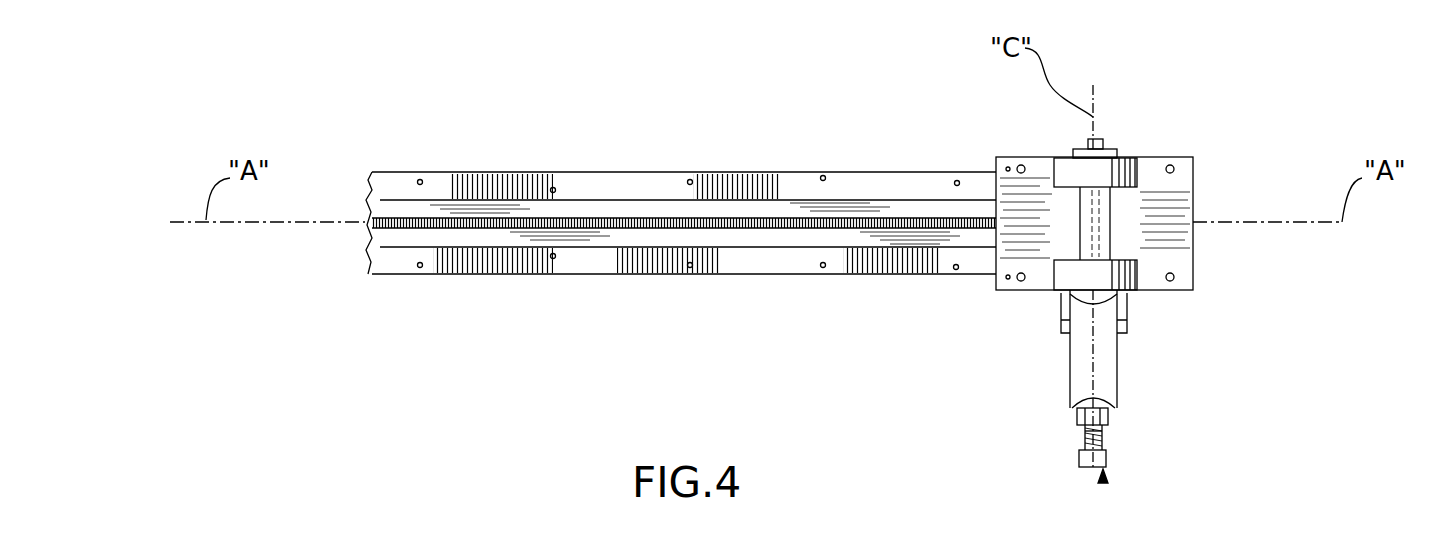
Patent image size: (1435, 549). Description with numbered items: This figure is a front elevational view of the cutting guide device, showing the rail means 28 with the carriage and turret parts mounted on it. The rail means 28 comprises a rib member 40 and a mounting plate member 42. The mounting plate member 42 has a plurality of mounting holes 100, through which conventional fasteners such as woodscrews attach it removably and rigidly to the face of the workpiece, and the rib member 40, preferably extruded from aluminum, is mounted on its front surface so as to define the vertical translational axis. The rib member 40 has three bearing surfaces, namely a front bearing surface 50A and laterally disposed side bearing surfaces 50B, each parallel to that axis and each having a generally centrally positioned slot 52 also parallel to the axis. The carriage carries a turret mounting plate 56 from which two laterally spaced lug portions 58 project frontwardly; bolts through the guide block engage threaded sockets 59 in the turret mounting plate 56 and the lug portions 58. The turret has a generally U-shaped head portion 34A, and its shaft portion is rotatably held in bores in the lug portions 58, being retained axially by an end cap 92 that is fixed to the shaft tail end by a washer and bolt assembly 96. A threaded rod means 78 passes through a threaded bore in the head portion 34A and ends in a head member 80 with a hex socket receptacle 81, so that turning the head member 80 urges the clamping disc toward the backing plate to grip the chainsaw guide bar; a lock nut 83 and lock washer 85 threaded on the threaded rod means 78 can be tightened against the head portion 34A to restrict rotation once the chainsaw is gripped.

The rail means 28 is at (362, 247).
The rib member 40 is at (500, 208).
The mounting plate member 42 is at (390, 185).
The front bearing surface 50A is at (654, 234).
The side bearing surfaces 50B is at (805, 190).
The slot 52 is at (485, 240).
The turret mounting plate 56 is at (1195, 177).
The lug portions 58 is at (1133, 172).
The threaded sockets 59 is at (1018, 166).
The threaded rod means 78 is at (1086, 432).
The head member 80 is at (1086, 455).
The hex socket receptacle 81 is at (1105, 480).
The lock nut 83 is at (1105, 427).
The lock washer 85 is at (1105, 412).
The end cap 92 is at (1077, 152).
The bolt assembly 96 is at (1100, 140).
The mounting holes 100 is at (956, 270).
The head portion 34A is at (1100, 350).